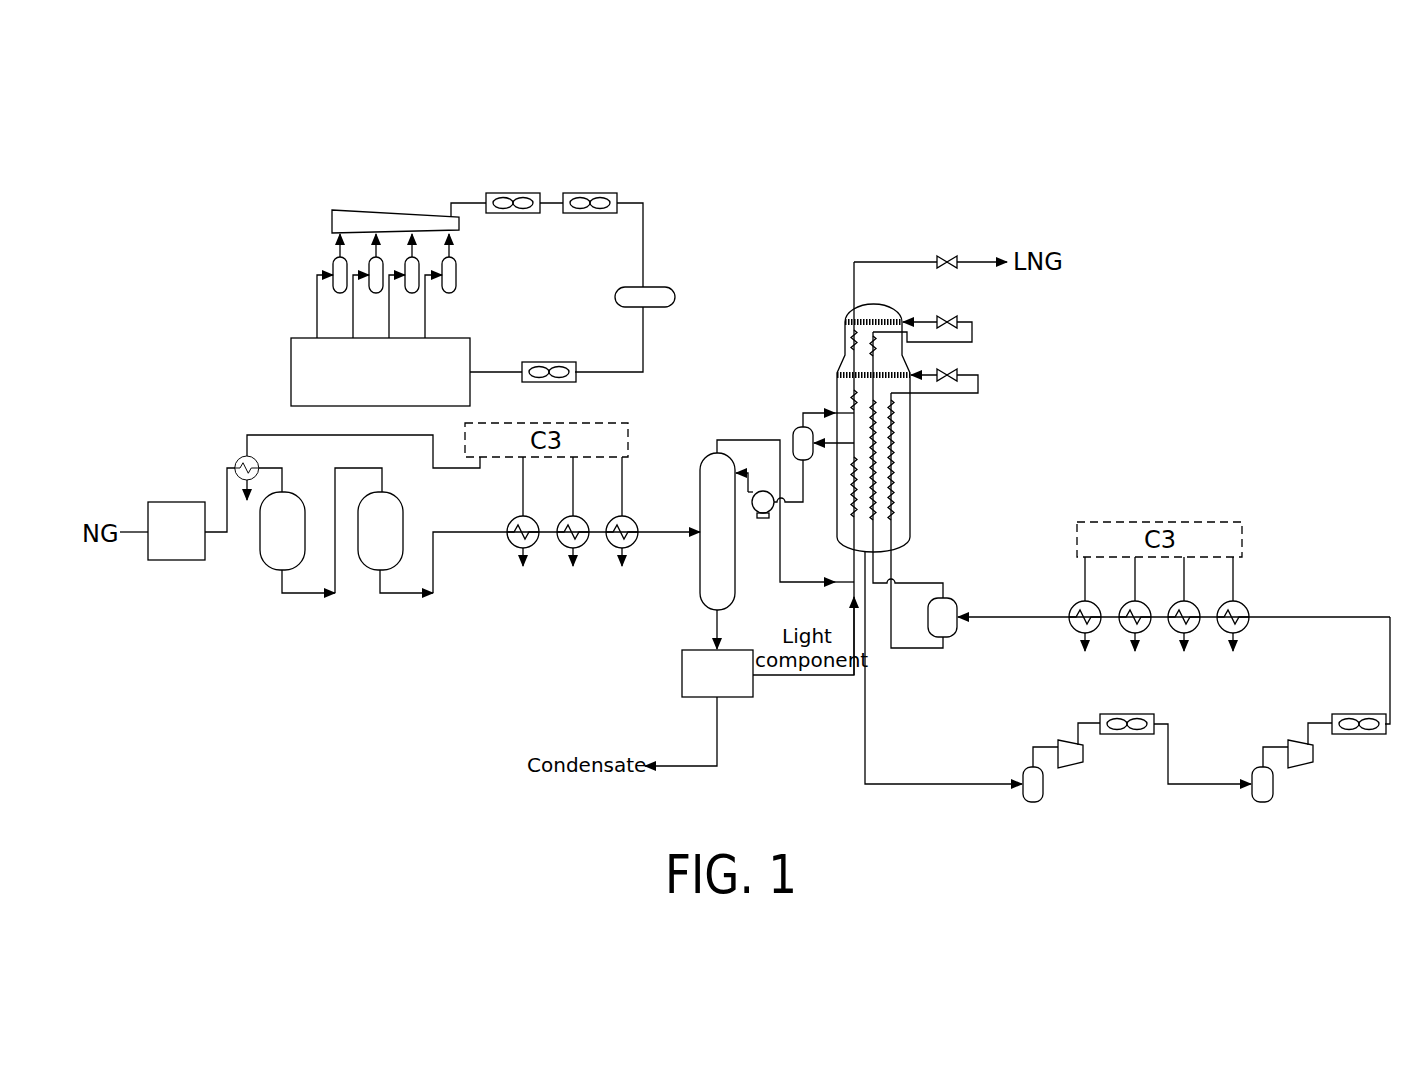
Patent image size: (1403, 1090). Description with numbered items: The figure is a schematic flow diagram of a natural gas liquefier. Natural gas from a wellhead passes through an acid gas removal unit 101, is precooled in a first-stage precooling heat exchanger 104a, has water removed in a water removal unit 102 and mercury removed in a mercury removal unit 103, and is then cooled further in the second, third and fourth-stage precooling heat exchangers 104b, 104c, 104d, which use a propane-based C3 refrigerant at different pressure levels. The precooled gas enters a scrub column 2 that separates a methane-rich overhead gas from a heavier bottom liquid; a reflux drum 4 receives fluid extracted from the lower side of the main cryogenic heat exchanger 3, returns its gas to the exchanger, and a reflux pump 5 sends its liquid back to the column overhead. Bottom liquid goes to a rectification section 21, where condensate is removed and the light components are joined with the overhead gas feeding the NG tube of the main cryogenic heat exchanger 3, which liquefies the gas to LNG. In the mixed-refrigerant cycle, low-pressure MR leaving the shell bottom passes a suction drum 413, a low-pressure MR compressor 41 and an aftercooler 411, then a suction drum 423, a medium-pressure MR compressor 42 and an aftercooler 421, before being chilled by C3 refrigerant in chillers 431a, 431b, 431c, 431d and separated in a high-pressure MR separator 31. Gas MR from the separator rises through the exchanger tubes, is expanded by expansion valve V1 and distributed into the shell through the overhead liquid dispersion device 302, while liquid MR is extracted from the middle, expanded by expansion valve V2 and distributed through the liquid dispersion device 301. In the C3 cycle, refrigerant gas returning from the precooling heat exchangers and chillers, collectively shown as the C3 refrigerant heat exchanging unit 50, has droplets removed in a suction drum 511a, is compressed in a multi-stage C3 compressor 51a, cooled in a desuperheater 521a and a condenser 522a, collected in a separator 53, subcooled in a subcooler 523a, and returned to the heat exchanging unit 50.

The C3 refrigerant heat exchanging unit 50 is at (291, 372).
The C3 compressor 51a is at (368, 210).
The suction drum 511a is at (372, 257).
The desuperheater 521a is at (513, 193).
The condenser 522a is at (592, 193).
The subcooler 523a is at (546, 362).
The separator 53 is at (655, 287).
The acid gas removal unit 101 is at (176, 502).
The water removal unit 102 is at (262, 567).
The mercury removal unit 103 is at (371, 572).
The precooling heat exchanger 104a is at (236, 459).
The precooling heat exchanger 104b is at (510, 521).
The precooling heat exchanger 104c is at (566, 550).
The precooling heat exchanger 104d is at (628, 549).
The scrub column 2 is at (710, 454).
The reflux pump 5 is at (762, 518).
The reflux drum 4 is at (802, 427).
The rectification section 21 is at (682, 677).
The main cryogenic heat exchanger 3 is at (903, 523).
The liquid dispersion device 301 is at (843, 370).
The liquid dispersion device 302 is at (868, 320).
The expansion valve V1 is at (934, 320).
The expansion valve V2 is at (952, 373).
The high-pressure MR separator 31 is at (948, 597).
The chiller 431a is at (1073, 605).
The chiller 431b is at (1125, 632).
The chiller 431c is at (1195, 632).
The chiller 431d is at (1249, 605).
The suction drum 413 is at (1030, 806).
The low-pressure MR compressor 41 is at (1070, 770).
The aftercooler 411 is at (1128, 737).
The suction drum 423 is at (1260, 806).
The medium-pressure MR compressor 42 is at (1300, 770).
The aftercooler 421 is at (1358, 713).